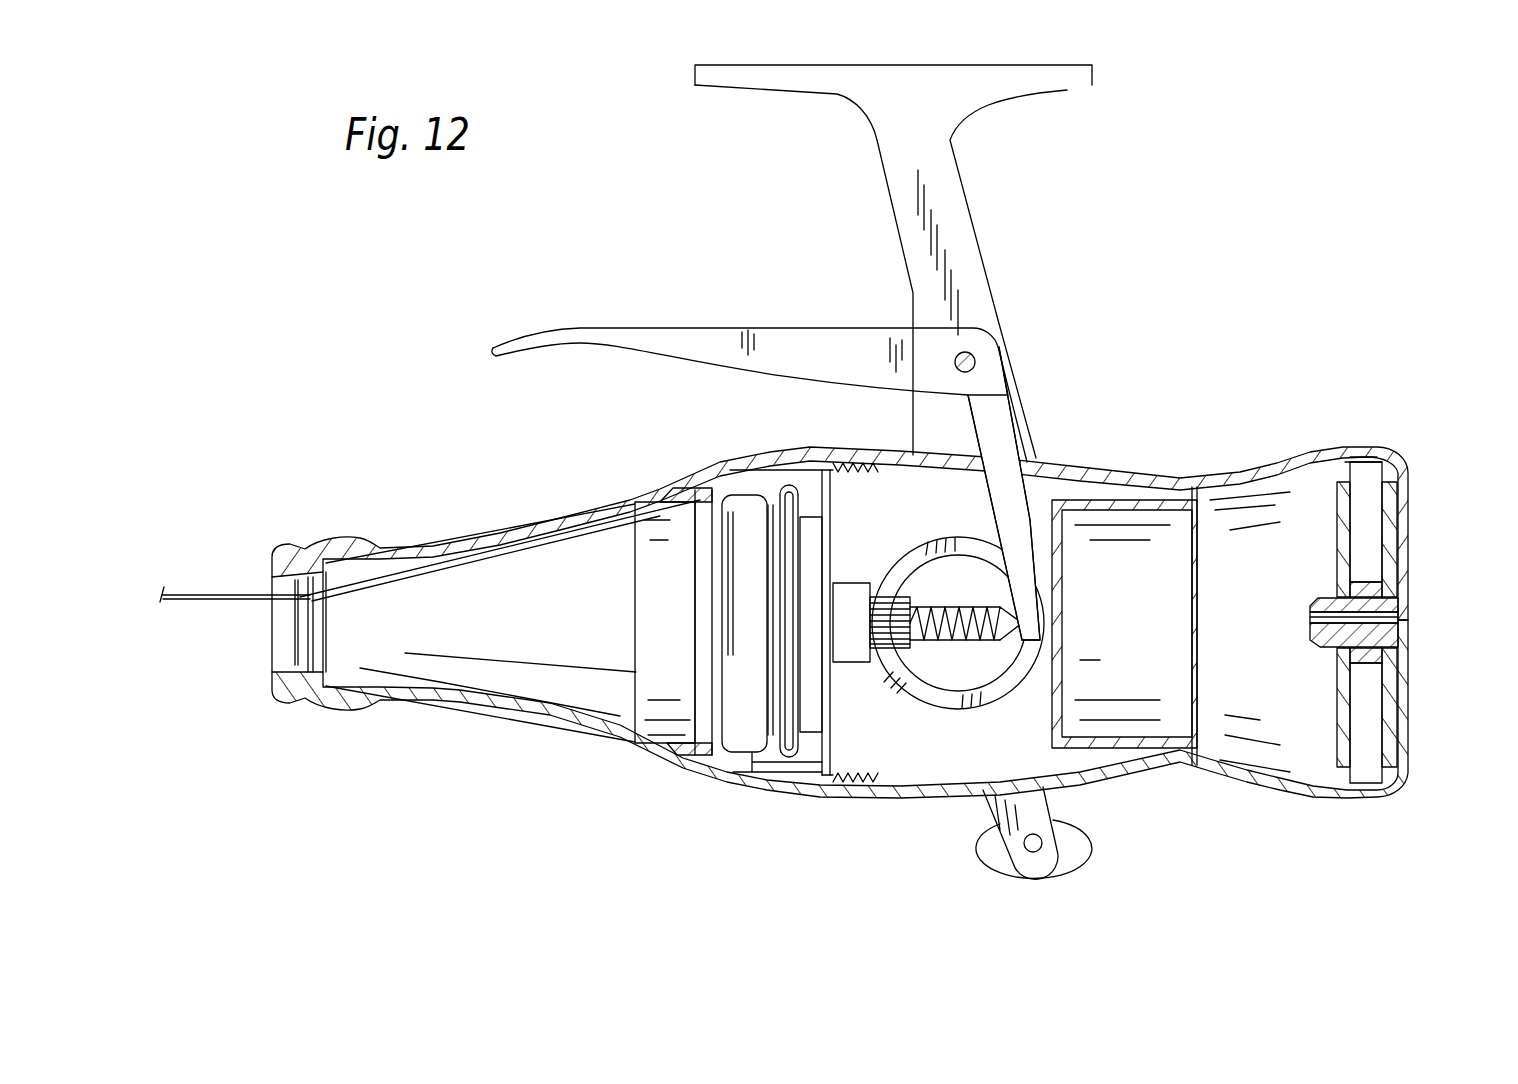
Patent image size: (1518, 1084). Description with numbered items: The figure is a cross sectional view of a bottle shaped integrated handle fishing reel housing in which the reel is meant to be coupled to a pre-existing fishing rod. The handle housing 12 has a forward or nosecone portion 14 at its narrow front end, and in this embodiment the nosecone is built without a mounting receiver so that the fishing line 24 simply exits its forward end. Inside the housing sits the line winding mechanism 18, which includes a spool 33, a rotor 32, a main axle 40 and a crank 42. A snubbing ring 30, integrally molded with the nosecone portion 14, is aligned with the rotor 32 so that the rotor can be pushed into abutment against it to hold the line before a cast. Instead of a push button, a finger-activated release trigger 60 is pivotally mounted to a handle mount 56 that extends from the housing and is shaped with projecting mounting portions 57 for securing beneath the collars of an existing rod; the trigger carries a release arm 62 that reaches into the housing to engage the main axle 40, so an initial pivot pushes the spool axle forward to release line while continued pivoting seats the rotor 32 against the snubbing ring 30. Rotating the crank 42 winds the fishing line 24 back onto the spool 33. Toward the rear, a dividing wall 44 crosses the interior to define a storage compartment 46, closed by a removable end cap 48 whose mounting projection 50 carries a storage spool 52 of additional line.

The handle housing 12 is at (1253, 463).
The forward or nosecone portion 14 is at (433, 703).
The line winding mechanism 18 is at (855, 668).
The fishing line 24 is at (195, 597).
The snubbing ring 30 is at (727, 780).
The rotor 32 is at (790, 787).
The spool 33 is at (778, 492).
The main axle 40 is at (958, 612).
The crank 42 is at (1058, 853).
The dividing wall 44 is at (1062, 618).
The storage compartment 46 is at (1180, 660).
The end cap 48 is at (1408, 583).
The mounting projection 50 is at (1313, 635).
The storage spool 52 is at (1355, 462).
The handle mount 56 is at (980, 243).
The projecting mounting portions 57 is at (760, 90).
The finger-activated release trigger 60 is at (680, 328).
The release arm 62 is at (1042, 465).